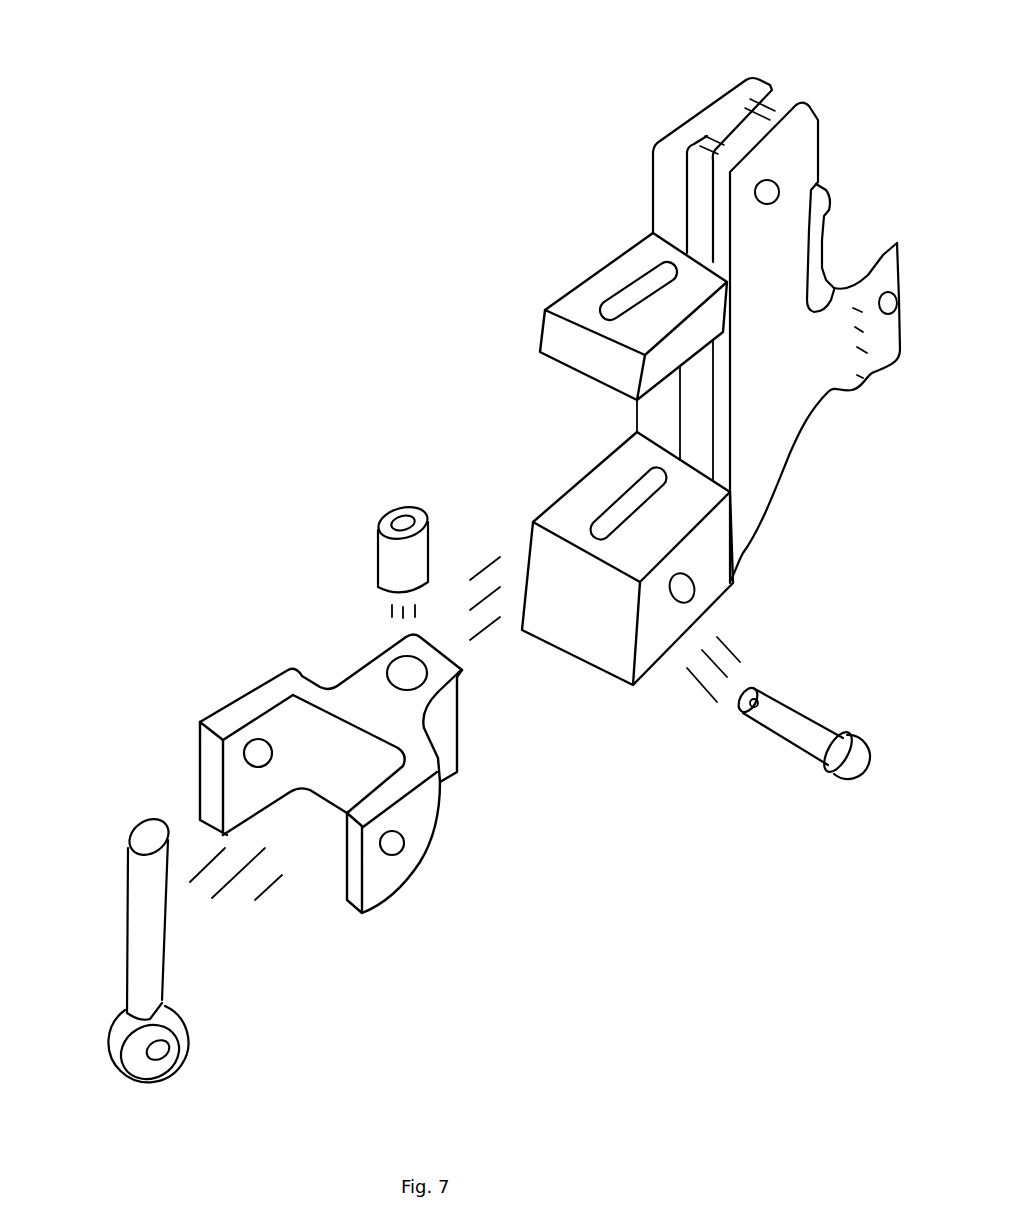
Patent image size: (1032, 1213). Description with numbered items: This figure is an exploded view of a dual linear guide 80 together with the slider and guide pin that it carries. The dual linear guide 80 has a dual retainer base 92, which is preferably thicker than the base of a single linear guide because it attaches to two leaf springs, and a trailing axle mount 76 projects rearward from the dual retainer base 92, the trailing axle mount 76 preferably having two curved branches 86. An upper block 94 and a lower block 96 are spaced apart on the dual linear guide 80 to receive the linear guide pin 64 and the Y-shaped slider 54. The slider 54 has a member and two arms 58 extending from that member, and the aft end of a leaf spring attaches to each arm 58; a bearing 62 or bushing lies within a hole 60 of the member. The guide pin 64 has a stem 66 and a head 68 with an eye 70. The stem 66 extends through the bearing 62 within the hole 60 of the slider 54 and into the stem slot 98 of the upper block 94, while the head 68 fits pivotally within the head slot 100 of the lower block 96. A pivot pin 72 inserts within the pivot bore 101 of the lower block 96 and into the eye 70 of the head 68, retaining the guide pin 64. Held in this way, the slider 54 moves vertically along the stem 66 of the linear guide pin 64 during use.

The slider 54 is at (367, 730).
The arms 58 is at (241, 707).
The hole 60 is at (403, 670).
The bearing 62 is at (393, 512).
The guide pin 64 is at (168, 934).
The stem 66 is at (145, 843).
The head 68 is at (175, 1035).
The eye 70 is at (158, 1053).
The pivot pin 72 is at (807, 732).
The trailing axle mount 76 is at (827, 290).
The dual linear guide 80 is at (788, 153).
The curved branches 86 is at (885, 362).
The dual retainer base 92 is at (765, 405).
The upper block 94 is at (582, 264).
The lower block 96 is at (658, 570).
The stem slot 98 is at (632, 283).
The head slot 100 is at (610, 492).
The pivot bore 101 is at (697, 587).